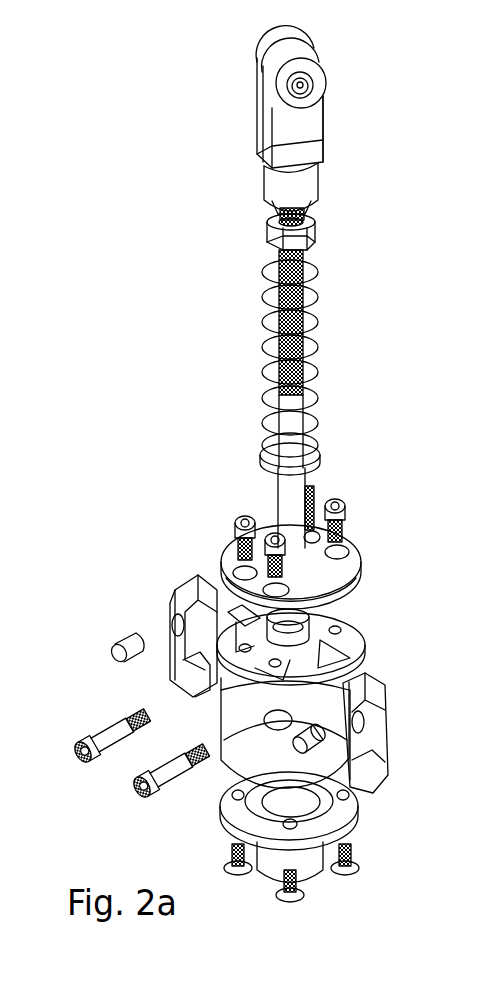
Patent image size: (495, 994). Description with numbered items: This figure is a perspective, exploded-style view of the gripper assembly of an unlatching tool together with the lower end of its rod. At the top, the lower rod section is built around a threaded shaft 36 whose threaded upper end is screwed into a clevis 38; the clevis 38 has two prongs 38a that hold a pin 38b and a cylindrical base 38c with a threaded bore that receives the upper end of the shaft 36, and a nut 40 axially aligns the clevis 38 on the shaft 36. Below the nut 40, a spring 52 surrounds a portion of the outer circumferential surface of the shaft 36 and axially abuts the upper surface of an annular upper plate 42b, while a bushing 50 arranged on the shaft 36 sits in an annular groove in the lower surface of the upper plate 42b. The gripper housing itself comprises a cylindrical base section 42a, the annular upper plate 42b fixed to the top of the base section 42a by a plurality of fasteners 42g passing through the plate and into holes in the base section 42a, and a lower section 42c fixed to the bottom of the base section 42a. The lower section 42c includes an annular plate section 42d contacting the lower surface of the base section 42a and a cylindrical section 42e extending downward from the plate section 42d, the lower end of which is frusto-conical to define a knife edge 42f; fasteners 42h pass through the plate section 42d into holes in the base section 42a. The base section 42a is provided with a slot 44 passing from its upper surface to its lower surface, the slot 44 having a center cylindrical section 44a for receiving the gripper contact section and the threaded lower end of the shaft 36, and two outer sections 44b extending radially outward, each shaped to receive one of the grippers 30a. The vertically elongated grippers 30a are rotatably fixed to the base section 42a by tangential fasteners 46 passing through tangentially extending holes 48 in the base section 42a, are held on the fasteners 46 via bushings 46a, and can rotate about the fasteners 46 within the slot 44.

The grippers 30a is at (176, 593).
The threaded shaft 36 is at (316, 494).
The clevis 38 is at (306, 80).
The prongs 38a is at (326, 115).
The pin 38b is at (312, 93).
The cylindrical base 38c is at (280, 197).
The nut 40 is at (317, 243).
The cylindrical base section 42a is at (368, 633).
The annular upper plate 42b is at (364, 562).
The lower section 42c is at (366, 812).
The annular plate section 42d is at (352, 815).
The cylindrical section 42e is at (268, 862).
The knife edge 42f is at (300, 882).
The fasteners 42g is at (347, 509).
The fasteners 42h is at (360, 860).
The slot 44 is at (350, 661).
The center cylindrical section 44a is at (262, 655).
The outer sections 44b is at (238, 618).
The fasteners 46 is at (177, 782).
The bushings 46a is at (123, 636).
The tangentially extending holes 48 is at (266, 722).
The bushing 50 is at (316, 624).
The spring 52 is at (322, 322).